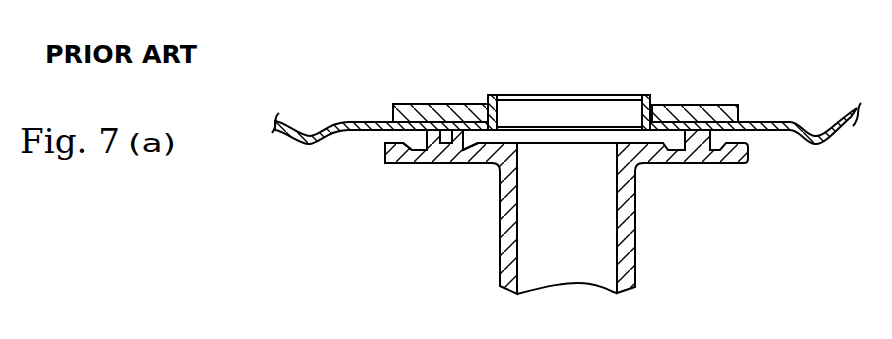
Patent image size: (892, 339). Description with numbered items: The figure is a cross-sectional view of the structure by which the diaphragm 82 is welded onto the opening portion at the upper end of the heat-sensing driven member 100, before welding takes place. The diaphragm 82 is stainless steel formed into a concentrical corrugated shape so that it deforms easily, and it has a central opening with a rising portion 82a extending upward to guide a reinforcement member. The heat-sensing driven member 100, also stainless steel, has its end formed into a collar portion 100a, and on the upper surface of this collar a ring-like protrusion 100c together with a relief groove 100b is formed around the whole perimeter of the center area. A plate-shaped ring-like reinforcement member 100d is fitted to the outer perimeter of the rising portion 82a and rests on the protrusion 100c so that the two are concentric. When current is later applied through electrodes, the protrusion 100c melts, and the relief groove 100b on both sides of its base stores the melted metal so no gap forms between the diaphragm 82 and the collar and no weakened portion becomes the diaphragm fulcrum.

The diaphragm 82 is at (310, 148).
The rising portion 82a is at (490, 96).
The heat-sensing driven member 100 is at (645, 270).
The collar portion 100a is at (397, 163).
The relief groove 100b is at (463, 163).
The ring-like protrusion 100c is at (442, 140).
The reinforcement member 100d is at (418, 104).